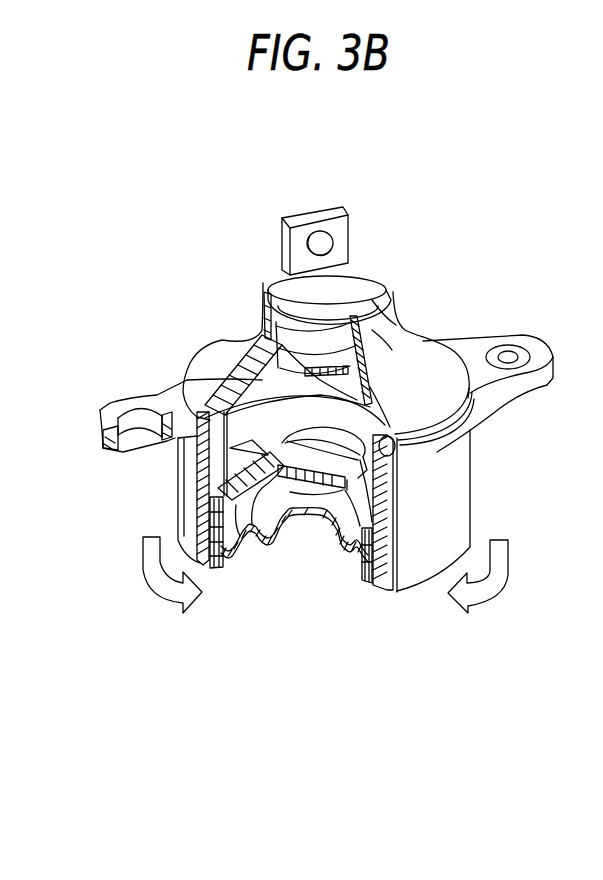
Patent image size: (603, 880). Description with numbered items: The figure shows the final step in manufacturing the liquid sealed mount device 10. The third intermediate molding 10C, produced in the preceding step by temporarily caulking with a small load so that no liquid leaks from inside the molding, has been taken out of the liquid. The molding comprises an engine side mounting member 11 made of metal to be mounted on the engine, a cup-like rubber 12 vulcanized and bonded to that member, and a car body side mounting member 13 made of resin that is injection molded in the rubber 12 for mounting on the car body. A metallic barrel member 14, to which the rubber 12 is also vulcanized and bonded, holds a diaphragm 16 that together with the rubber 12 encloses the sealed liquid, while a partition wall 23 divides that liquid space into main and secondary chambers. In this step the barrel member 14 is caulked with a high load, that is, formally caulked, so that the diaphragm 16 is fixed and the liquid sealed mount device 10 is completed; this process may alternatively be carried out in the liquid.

The liquid sealed mount device 10 is at (437, 653).
The third intermediate molding 10C is at (230, 337).
The engine side mounting member 11 is at (358, 275).
The cup-like rubber 12 is at (405, 367).
The car body side mounting member 13 is at (433, 500).
The barrel member 14 is at (373, 585).
The diaphragm 16 is at (310, 524).
The partition wall 23 is at (253, 437).